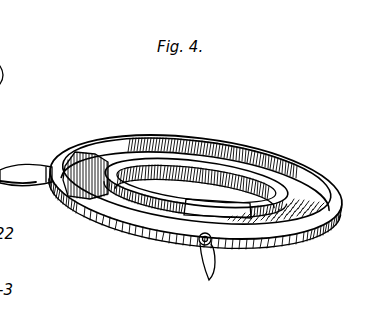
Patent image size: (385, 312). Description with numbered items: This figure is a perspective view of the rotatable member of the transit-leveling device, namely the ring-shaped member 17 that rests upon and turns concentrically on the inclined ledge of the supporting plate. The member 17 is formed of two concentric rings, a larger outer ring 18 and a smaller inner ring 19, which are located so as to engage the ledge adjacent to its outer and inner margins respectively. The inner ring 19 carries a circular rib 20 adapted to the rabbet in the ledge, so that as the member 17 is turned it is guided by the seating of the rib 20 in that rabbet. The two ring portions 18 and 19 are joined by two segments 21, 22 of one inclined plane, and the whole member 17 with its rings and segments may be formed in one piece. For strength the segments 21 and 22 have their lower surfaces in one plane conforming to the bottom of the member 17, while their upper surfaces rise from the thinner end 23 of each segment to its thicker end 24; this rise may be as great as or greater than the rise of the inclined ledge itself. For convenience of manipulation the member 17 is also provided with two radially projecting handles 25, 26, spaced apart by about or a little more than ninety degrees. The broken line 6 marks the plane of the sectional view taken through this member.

The section line 6 is at (195, 156).
The ring-shaped member 17 is at (157, 147).
The outer ring 18 is at (286, 167).
The inner ring 19 is at (134, 212).
The circular rib 20 is at (196, 183).
The inclined plane segment 21 is at (104, 160).
The inclined plane segment 22 is at (257, 216).
The thinner end of segment 23 is at (206, 162).
The thicker end of segment 24 is at (72, 155).
The radially projecting handle 25 is at (28, 175).
The radially projecting handle 26 is at (199, 263).